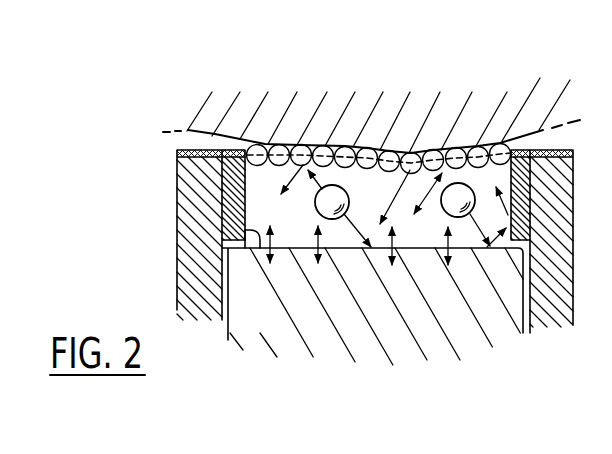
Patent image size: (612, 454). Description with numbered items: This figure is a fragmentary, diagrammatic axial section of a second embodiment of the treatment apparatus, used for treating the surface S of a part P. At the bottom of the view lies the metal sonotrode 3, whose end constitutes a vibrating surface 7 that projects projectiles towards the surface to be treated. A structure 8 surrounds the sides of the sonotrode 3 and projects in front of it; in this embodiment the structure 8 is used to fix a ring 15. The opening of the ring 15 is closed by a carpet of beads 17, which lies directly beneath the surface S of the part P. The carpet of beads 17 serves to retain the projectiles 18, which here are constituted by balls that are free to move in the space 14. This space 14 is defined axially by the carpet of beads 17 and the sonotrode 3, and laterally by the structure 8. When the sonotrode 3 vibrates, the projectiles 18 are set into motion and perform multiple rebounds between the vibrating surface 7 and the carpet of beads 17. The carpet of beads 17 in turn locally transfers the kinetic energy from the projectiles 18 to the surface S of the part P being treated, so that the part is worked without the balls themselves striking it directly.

The surface S is at (214, 134).
The part P is at (395, 138).
The carpet of beads 17 is at (302, 147).
The ring 15 is at (517, 197).
The structure 8 is at (193, 183).
The vibrating surface 7 is at (245, 233).
The space 14 is at (276, 210).
The sonotrode 3 is at (262, 288).
The projectiles 18 is at (330, 219).